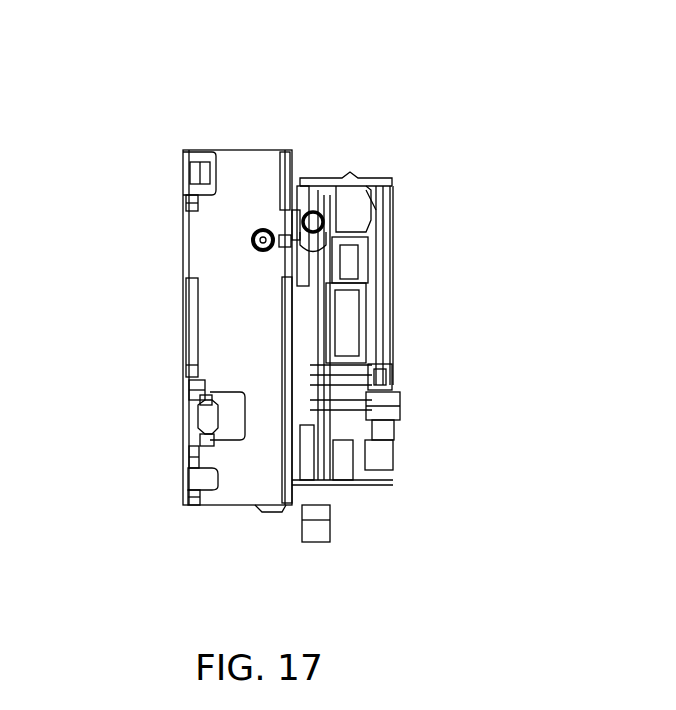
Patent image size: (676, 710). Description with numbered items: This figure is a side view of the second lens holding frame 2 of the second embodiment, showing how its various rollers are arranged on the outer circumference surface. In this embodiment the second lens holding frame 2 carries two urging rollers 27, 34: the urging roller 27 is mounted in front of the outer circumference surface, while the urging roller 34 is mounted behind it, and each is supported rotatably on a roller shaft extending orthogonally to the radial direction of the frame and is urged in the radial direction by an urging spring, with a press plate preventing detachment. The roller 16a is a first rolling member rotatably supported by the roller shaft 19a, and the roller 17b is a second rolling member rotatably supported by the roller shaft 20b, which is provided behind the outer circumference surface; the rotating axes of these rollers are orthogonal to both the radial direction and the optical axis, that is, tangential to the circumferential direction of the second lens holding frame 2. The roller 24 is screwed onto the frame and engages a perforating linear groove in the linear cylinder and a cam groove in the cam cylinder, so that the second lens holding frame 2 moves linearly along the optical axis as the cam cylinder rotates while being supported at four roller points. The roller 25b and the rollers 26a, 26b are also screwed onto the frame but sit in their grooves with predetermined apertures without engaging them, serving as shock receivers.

The second lens holding frame 2 is at (190, 263).
The urging roller 27 is at (217, 151).
The roller 26b is at (263, 230).
The urging roller 34 is at (353, 181).
The roller 25b is at (318, 243).
The roller shaft 19a is at (186, 386).
The roller 16a is at (186, 421).
The roller shaft 20b is at (400, 386).
The roller 17b is at (400, 417).
The roller 26a is at (262, 508).
The roller 24 is at (330, 542).